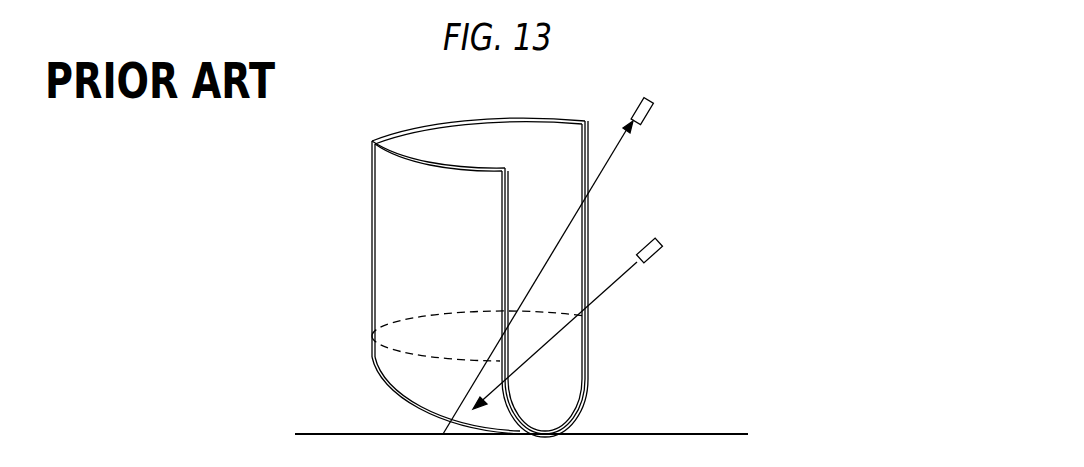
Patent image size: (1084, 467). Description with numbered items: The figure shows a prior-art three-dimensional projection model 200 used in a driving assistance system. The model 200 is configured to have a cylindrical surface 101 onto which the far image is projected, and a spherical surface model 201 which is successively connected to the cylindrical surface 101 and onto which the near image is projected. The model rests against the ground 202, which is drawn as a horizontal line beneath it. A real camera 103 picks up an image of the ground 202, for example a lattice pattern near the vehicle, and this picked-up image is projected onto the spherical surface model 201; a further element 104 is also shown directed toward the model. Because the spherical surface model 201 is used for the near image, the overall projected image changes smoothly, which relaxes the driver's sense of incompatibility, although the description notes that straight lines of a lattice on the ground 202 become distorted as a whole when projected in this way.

The three-dimensional projection model 200 is at (305, 260).
The cylindrical surface 101 is at (372, 297).
The spherical surface model 201 is at (375, 356).
The ground 202 is at (714, 433).
The real camera 103 is at (660, 252).
The light receiving element 104 is at (655, 112).